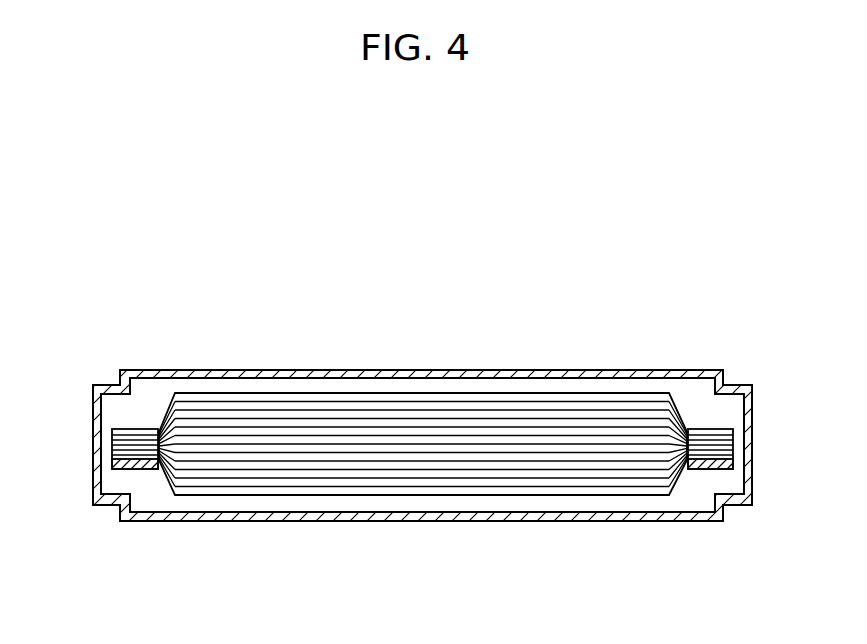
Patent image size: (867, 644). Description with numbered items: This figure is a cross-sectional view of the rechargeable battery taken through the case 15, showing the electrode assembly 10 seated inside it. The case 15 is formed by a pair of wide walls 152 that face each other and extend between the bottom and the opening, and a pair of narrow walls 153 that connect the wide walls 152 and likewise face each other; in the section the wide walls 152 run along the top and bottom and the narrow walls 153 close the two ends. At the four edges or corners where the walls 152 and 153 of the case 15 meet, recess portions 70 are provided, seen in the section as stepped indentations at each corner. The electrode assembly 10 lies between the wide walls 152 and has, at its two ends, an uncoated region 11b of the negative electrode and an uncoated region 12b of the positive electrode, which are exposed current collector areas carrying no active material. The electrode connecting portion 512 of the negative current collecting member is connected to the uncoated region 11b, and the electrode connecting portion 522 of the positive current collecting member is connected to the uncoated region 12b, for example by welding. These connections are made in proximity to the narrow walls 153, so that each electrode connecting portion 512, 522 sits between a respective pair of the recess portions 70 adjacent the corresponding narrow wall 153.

The electrode assembly 10 is at (536, 386).
The uncoated region of the negative electrode 11b is at (131, 443).
The uncoated region of the positive electrode 12b is at (713, 444).
The case 15 is at (280, 362).
The wide walls 152 is at (373, 369).
The narrow walls 153 is at (92, 408).
The electrode connecting portion 512 is at (146, 470).
The electrode connecting portion 522 is at (700, 470).
The recess portions 70 is at (740, 507).